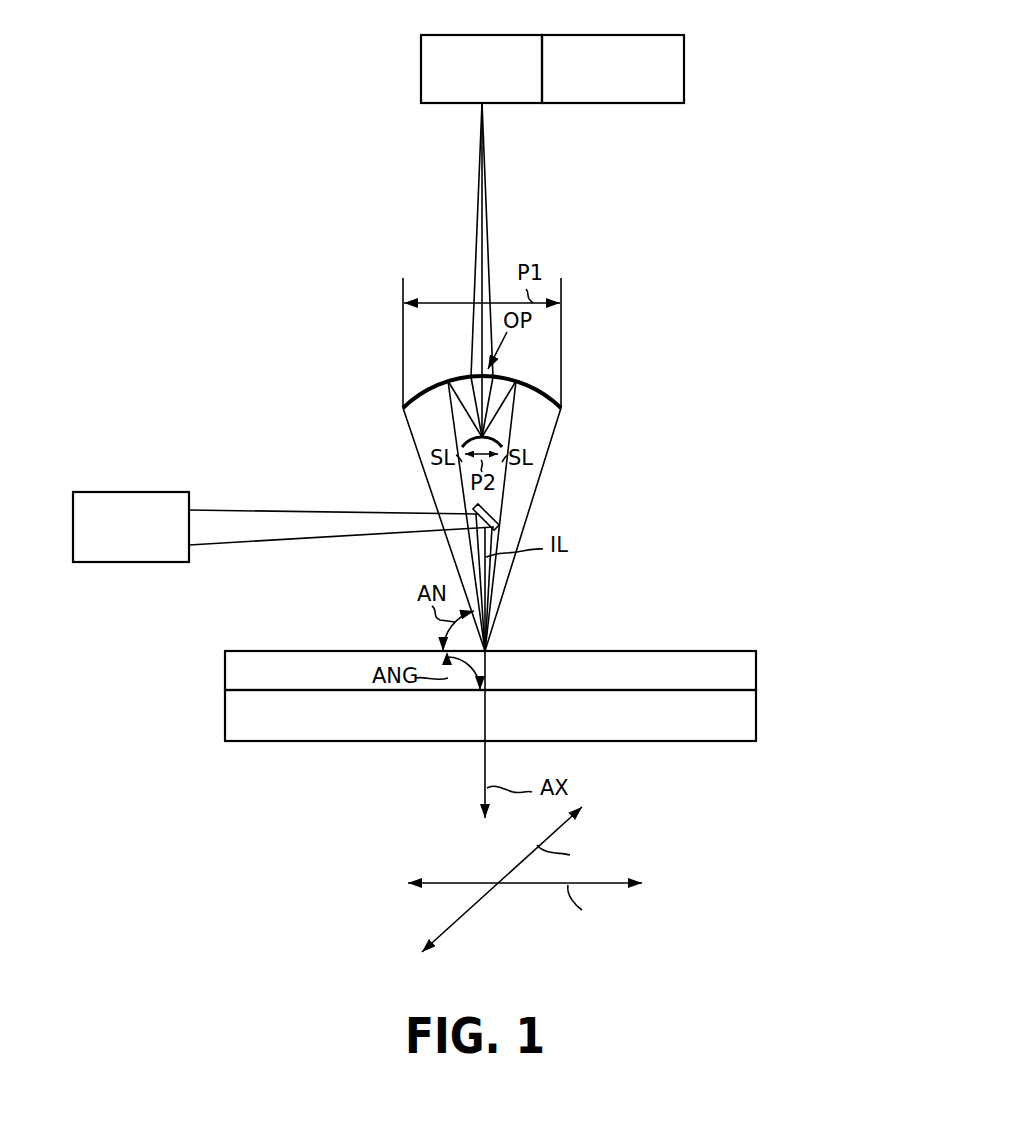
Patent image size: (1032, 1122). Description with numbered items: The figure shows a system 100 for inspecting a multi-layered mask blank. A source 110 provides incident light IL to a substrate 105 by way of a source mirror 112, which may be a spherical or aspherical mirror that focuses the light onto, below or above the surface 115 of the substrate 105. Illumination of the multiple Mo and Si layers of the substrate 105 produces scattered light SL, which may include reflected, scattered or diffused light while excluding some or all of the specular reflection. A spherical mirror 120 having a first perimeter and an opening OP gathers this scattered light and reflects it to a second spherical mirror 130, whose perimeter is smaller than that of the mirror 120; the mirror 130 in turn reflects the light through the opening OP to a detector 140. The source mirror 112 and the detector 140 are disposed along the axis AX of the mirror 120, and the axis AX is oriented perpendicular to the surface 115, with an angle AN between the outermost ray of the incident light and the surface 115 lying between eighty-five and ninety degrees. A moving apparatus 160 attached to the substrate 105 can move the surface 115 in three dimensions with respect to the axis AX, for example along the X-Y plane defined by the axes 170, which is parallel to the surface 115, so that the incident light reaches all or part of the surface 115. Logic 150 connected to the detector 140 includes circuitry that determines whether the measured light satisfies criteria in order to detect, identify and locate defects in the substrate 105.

The system 100 is at (728, 115).
The substrate 105 is at (742, 686).
The source 110 is at (150, 552).
The source mirror 112 is at (499, 517).
The surface 115 is at (728, 652).
The mirror 120 is at (443, 384).
The mirror 130 is at (502, 443).
The detector 140 is at (500, 93).
The logic 150 is at (592, 93).
The moving apparatus 160 is at (748, 734).
The axes 170 is at (445, 859).